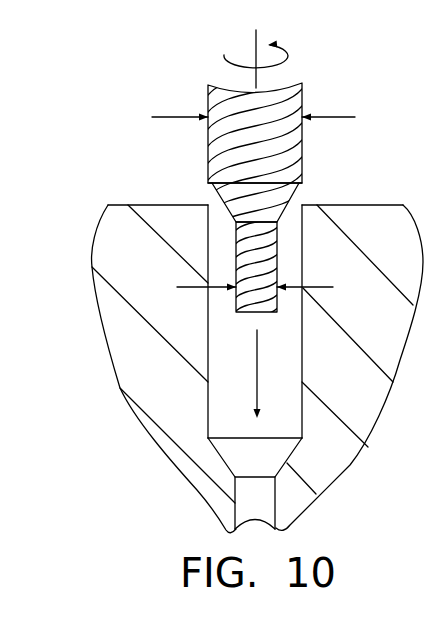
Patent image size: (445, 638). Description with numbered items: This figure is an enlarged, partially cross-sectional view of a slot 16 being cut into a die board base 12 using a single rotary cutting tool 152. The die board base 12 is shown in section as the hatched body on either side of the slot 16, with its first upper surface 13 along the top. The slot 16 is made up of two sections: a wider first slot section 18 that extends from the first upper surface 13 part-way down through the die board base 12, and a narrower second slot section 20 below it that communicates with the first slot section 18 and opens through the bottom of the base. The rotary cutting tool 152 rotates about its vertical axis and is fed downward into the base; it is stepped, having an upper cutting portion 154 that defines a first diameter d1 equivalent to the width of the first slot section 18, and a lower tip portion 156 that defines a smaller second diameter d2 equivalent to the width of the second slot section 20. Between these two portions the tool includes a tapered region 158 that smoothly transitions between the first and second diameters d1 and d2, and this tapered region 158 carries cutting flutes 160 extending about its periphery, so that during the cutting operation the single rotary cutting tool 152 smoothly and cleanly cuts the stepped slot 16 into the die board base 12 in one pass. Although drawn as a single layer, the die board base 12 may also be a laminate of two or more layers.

The die board base 12 is at (72, 262).
The first upper surface 13 is at (388, 205).
The slot 16 is at (318, 263).
The first slot section 18 is at (303, 368).
The second slot section 20 is at (275, 495).
The single rotary cutting tool 152 is at (202, 75).
The upper cutting portion 154 is at (293, 88).
The lower tip portion 156 is at (233, 302).
The tapered region 158 is at (280, 200).
The cutting flutes 160 is at (220, 196).
The first diameter d1 is at (175, 117).
The second diameter d2 is at (197, 287).